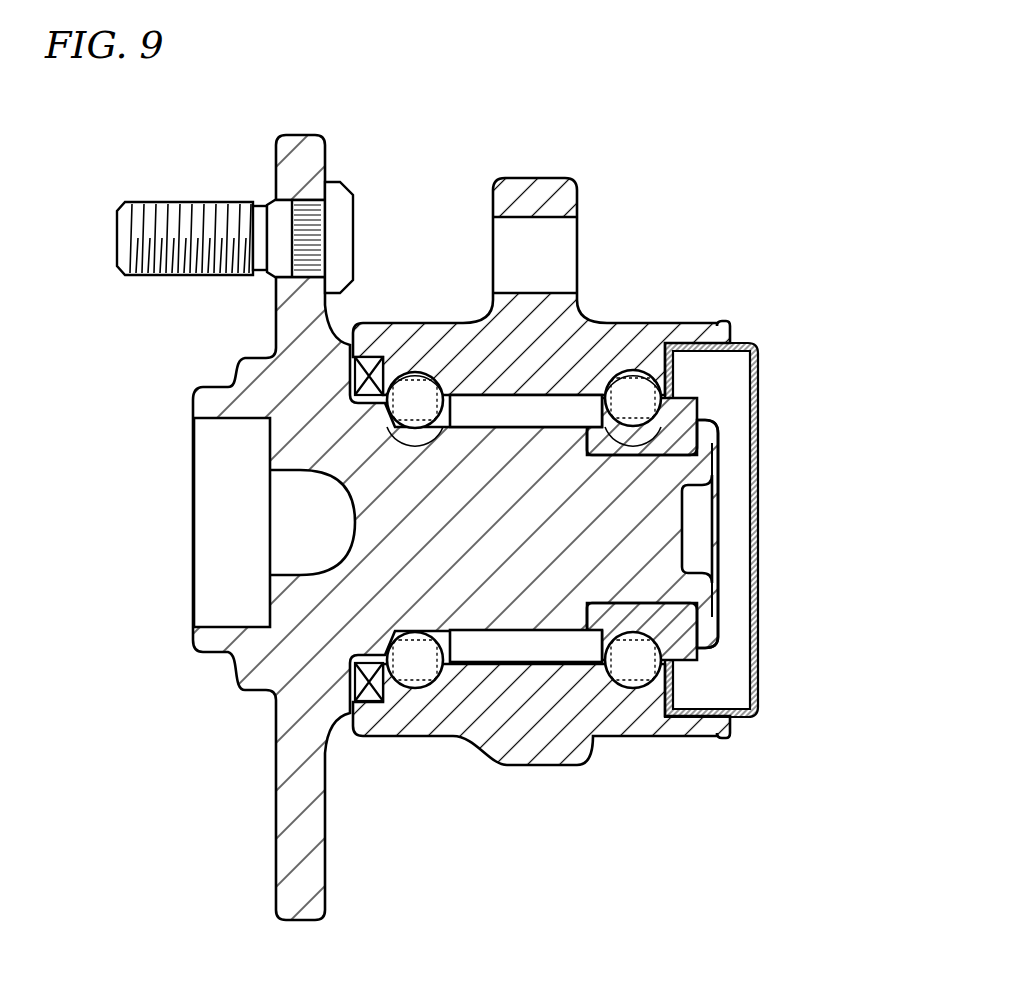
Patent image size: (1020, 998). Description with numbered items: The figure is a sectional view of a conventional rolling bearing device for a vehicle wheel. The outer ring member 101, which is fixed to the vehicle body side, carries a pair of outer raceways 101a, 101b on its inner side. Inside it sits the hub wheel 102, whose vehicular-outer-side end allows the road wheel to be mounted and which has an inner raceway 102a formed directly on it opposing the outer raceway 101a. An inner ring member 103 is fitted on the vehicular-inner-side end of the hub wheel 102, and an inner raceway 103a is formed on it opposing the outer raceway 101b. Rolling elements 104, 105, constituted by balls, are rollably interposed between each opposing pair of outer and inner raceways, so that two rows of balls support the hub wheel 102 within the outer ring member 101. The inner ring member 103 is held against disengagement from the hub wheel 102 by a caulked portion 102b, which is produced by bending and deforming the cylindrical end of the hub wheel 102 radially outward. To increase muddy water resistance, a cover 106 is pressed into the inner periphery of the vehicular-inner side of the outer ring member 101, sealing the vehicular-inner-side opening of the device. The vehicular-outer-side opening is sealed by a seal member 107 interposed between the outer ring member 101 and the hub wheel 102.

The outer ring member 101 is at (582, 314).
The outer raceway 101a is at (413, 375).
The outer raceway 101b is at (632, 375).
The hub wheel 102 is at (233, 686).
The inner raceway 102a is at (398, 410).
The caulked portion 102b is at (712, 617).
The inner ring member 103 is at (699, 647).
The inner raceway 103a is at (645, 412).
The rolling element 104 is at (432, 688).
The rolling element 105 is at (635, 688).
The cover 106 is at (760, 497).
The seal member 107 is at (367, 702).